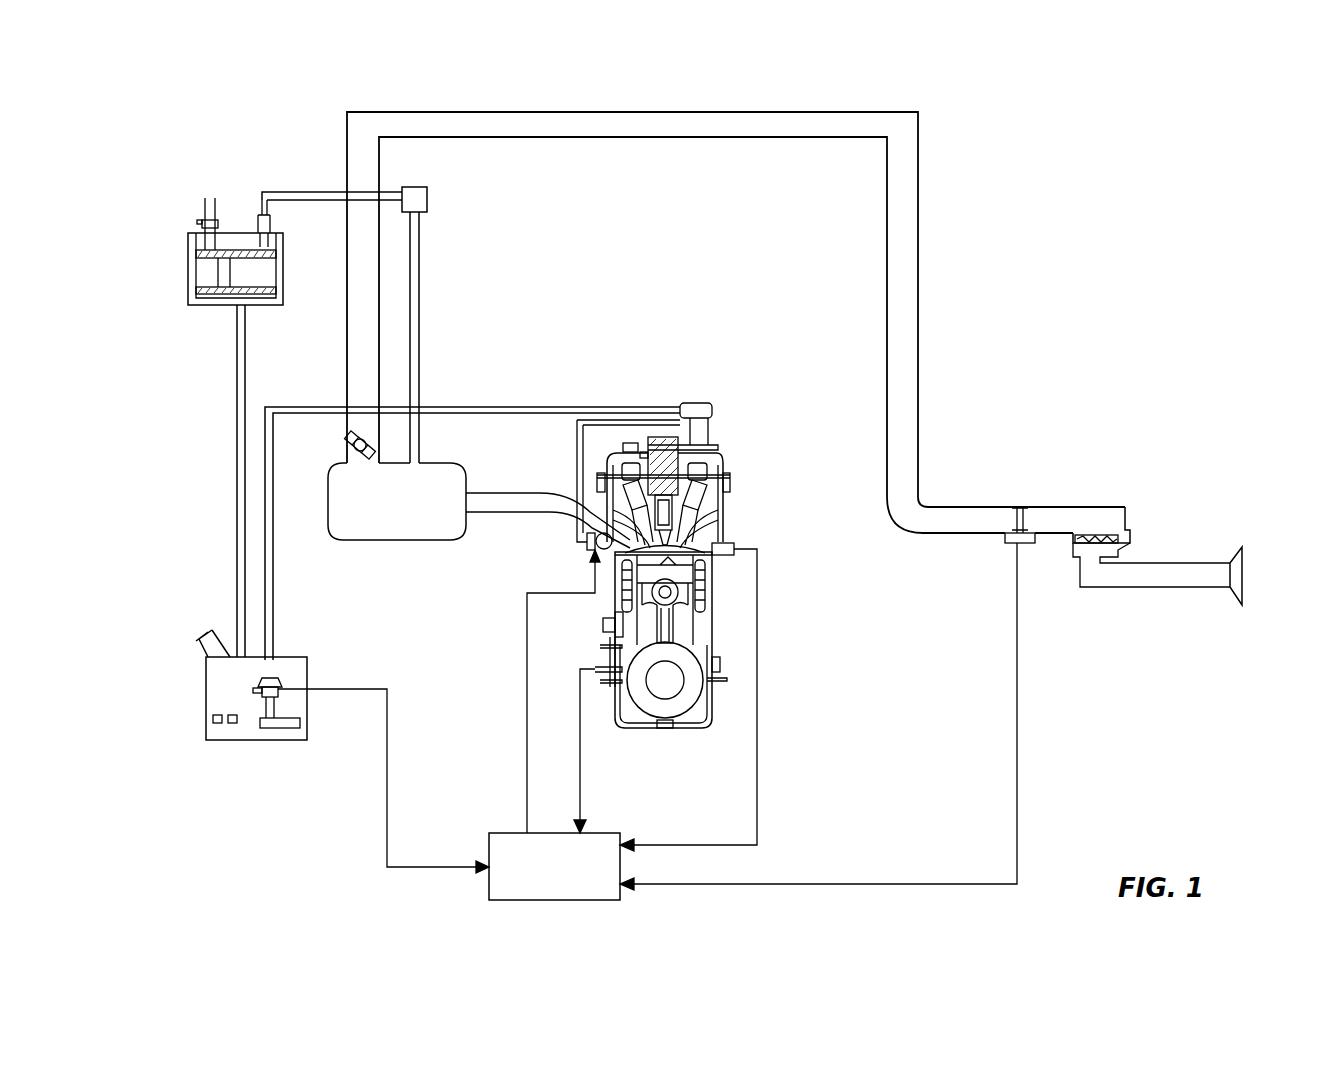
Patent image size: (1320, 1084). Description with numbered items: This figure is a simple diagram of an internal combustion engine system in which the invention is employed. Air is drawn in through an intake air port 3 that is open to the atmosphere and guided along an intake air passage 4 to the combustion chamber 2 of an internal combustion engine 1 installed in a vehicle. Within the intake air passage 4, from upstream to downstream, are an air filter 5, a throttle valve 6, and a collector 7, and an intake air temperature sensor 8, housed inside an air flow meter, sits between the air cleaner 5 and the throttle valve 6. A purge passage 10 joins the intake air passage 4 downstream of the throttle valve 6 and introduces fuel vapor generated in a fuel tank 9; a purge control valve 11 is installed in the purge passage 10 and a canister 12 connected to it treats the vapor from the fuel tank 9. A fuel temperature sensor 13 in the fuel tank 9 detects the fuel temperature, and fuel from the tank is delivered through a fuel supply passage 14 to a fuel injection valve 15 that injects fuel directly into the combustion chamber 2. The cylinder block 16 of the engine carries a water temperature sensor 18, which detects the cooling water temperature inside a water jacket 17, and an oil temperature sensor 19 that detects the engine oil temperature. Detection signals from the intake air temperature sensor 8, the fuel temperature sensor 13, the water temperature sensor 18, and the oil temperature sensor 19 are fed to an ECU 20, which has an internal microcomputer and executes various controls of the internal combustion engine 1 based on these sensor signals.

The internal combustion engine 1 is at (740, 484).
The combustion chamber 2 is at (722, 524).
The intake air port 3 is at (1250, 582).
The intake air passage 4 is at (920, 300).
The air filter 5 is at (1134, 522).
The throttle valve 6 is at (352, 447).
The collector 7 is at (398, 528).
The intake air temperature sensor 8 is at (1008, 545).
The fuel tank 9 is at (206, 700).
The purge passage 10 is at (421, 307).
The purge control valve 11 is at (428, 199).
The canister 12 is at (183, 271).
The fuel temperature sensor 13 is at (282, 683).
The fuel supply passage 14 is at (306, 407).
The fuel injection valve 15 is at (612, 552).
The cylinder block 16 is at (702, 630).
The water jacket 17 is at (705, 606).
The water temperature sensor 18 is at (736, 545).
The oil temperature sensor 19 is at (598, 670).
The ECU 20 is at (489, 878).